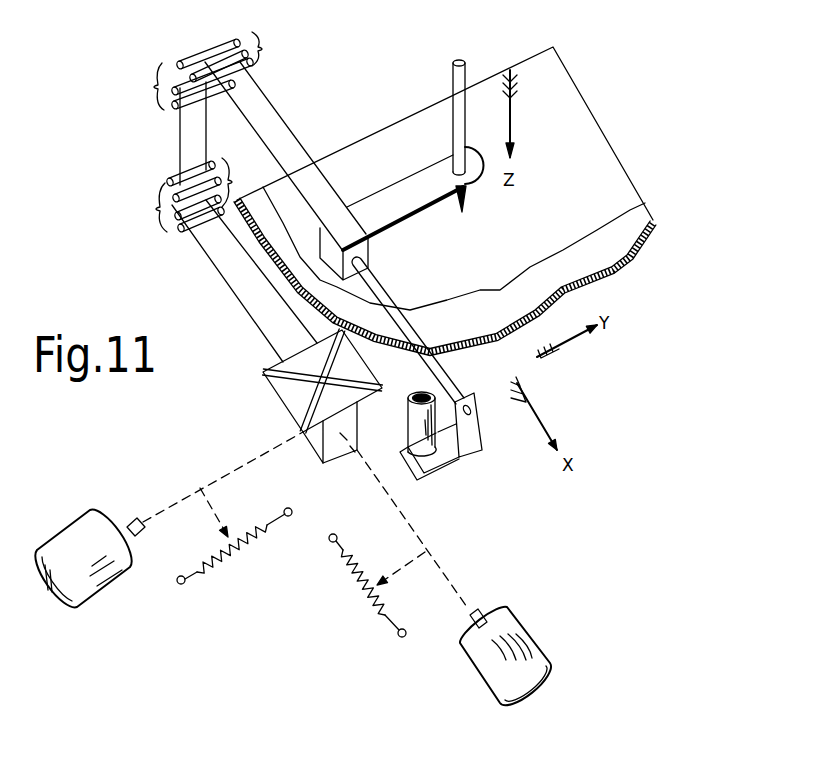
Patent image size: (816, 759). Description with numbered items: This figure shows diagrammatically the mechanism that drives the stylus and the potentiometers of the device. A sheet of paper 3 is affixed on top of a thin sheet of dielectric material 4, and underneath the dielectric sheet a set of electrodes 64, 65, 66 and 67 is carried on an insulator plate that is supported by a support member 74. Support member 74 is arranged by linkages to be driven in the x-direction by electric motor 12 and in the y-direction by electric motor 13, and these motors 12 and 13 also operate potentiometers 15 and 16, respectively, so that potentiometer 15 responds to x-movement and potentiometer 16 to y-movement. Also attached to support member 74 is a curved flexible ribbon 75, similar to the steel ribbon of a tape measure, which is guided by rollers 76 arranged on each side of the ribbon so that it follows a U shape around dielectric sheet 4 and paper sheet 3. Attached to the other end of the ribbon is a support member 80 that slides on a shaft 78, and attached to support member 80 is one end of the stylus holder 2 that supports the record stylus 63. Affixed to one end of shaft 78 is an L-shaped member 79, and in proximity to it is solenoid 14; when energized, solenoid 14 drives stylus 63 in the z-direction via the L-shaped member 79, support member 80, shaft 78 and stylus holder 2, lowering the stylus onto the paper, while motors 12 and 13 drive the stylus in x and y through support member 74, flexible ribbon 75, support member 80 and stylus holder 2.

The stylus holder 2 is at (386, 192).
The sheet of paper 3 is at (600, 220).
The sheet of dielectric material 4 is at (597, 253).
The electric motor 12 is at (523, 620).
The electric motor 13 is at (100, 592).
The solenoid 14 is at (423, 452).
The potentiometer 15 is at (367, 593).
The potentiometer 16 is at (240, 556).
The record stylus 63 is at (466, 66).
The electrode 64 is at (283, 395).
The electrode 65 is at (283, 363).
The electrode 66 is at (352, 368).
The electrode 67 is at (357, 403).
The support member 74 is at (330, 462).
The curved flexible ribbon 75 is at (278, 133).
The rollers 76 is at (157, 85).
The shaft 78 is at (387, 295).
The L-shaped member 79 is at (474, 437).
The support member 80 is at (370, 248).